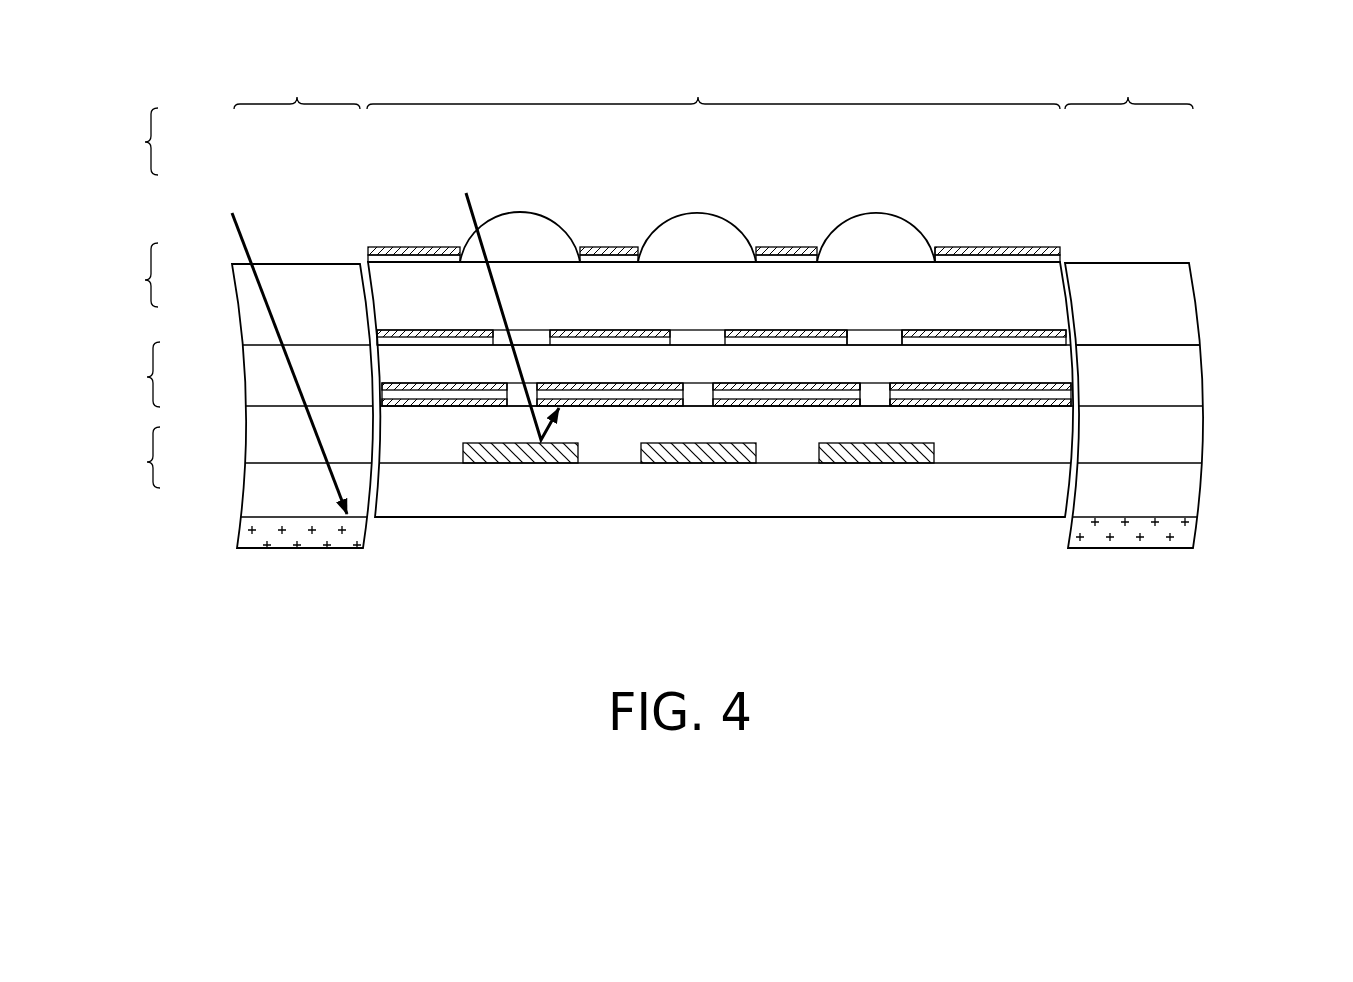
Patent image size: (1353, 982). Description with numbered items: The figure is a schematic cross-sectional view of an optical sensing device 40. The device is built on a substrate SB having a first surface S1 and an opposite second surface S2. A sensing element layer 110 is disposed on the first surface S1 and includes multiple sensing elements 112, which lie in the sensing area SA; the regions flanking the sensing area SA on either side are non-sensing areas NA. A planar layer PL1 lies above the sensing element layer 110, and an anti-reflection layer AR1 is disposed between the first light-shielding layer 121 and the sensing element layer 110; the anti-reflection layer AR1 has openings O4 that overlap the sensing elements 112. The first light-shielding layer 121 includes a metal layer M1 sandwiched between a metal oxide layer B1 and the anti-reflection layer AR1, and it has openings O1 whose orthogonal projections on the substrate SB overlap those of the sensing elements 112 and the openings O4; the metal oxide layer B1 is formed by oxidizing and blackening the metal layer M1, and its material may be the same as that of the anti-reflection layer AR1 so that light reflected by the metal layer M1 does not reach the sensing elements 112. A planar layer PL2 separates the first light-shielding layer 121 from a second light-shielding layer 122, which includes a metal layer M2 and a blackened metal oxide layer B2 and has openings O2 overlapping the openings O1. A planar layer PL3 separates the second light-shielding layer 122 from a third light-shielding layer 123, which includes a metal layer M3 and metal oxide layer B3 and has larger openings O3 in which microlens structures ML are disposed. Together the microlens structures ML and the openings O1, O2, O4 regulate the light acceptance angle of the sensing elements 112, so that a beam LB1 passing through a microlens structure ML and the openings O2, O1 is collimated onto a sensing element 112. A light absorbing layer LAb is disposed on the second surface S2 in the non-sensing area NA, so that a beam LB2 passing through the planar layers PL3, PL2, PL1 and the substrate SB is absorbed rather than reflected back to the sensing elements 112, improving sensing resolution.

The optical sensing device 40 is at (1338, 603).
The sensing element layer 110 is at (519, 461).
The sensing element 112 is at (463, 453).
The planar layer PL1 is at (258, 422).
The planar layer PL2 is at (257, 355).
The planar layer PL3 is at (240, 277).
The first light-shielding layer 121 is at (589, 374).
The second light-shielding layer 122 is at (584, 293).
The third light-shielding layer 123 is at (581, 183).
The metal oxide layer B1 is at (437, 380).
The metal oxide layer B2 is at (450, 328).
The metal oxide layer B3 is at (367, 250).
The metal layer M1 is at (387, 393).
The metal layer M2 is at (387, 341).
The metal layer M3 is at (367, 259).
The substrate SB is at (257, 497).
The microlens structure ML is at (532, 214).
The opening O1 is at (866, 387).
The opening O2 is at (900, 342).
The opening O3 is at (931, 259).
The opening O4 is at (863, 405).
The anti-reflection layer AR1 is at (1068, 403).
The first surface S1 is at (1148, 461).
The second surface S2 is at (1149, 518).
The light absorbing layer LAb is at (287, 545).
The beam LB1 is at (465, 200).
The beam LB2 is at (229, 212).
The non-sensing area NA is at (713, 84).
The sensing area SA is at (713, 83).